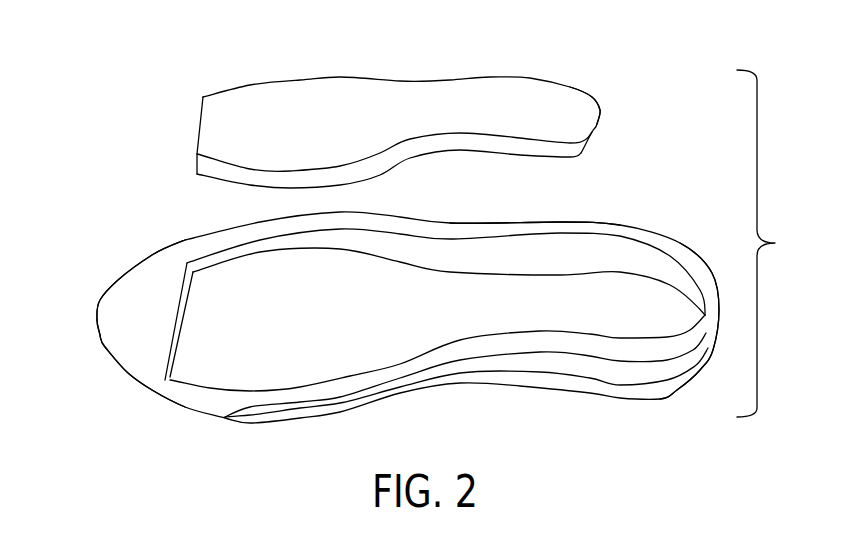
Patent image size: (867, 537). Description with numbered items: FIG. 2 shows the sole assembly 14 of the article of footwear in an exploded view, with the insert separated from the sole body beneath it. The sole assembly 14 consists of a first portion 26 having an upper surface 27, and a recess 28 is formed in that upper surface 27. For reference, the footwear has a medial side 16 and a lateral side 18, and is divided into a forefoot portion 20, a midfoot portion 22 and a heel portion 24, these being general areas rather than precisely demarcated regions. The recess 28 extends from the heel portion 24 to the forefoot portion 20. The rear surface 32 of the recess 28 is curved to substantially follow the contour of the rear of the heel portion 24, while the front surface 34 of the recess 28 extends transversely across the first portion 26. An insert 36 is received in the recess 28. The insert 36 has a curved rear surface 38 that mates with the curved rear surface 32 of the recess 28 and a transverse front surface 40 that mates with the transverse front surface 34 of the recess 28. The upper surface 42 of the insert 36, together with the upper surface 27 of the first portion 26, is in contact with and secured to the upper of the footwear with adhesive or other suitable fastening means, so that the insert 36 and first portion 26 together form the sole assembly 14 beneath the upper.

The sole assembly 14 is at (72, 160).
The medial side 16 is at (351, 416).
The lateral side 18 is at (190, 242).
The forefoot portion 20 is at (140, 362).
The midfoot portion 22 is at (428, 362).
The heel portion 24 is at (683, 322).
The first portion 26 is at (147, 277).
The upper surface 27 is at (562, 228).
The recess 28 is at (285, 243).
The rear surface 32 is at (704, 314).
The front surface 34 is at (180, 326).
The insert 36 is at (280, 83).
The curved rear surface 38 is at (601, 110).
The transverse front surface 40 is at (198, 122).
The upper surface 42 is at (525, 92).